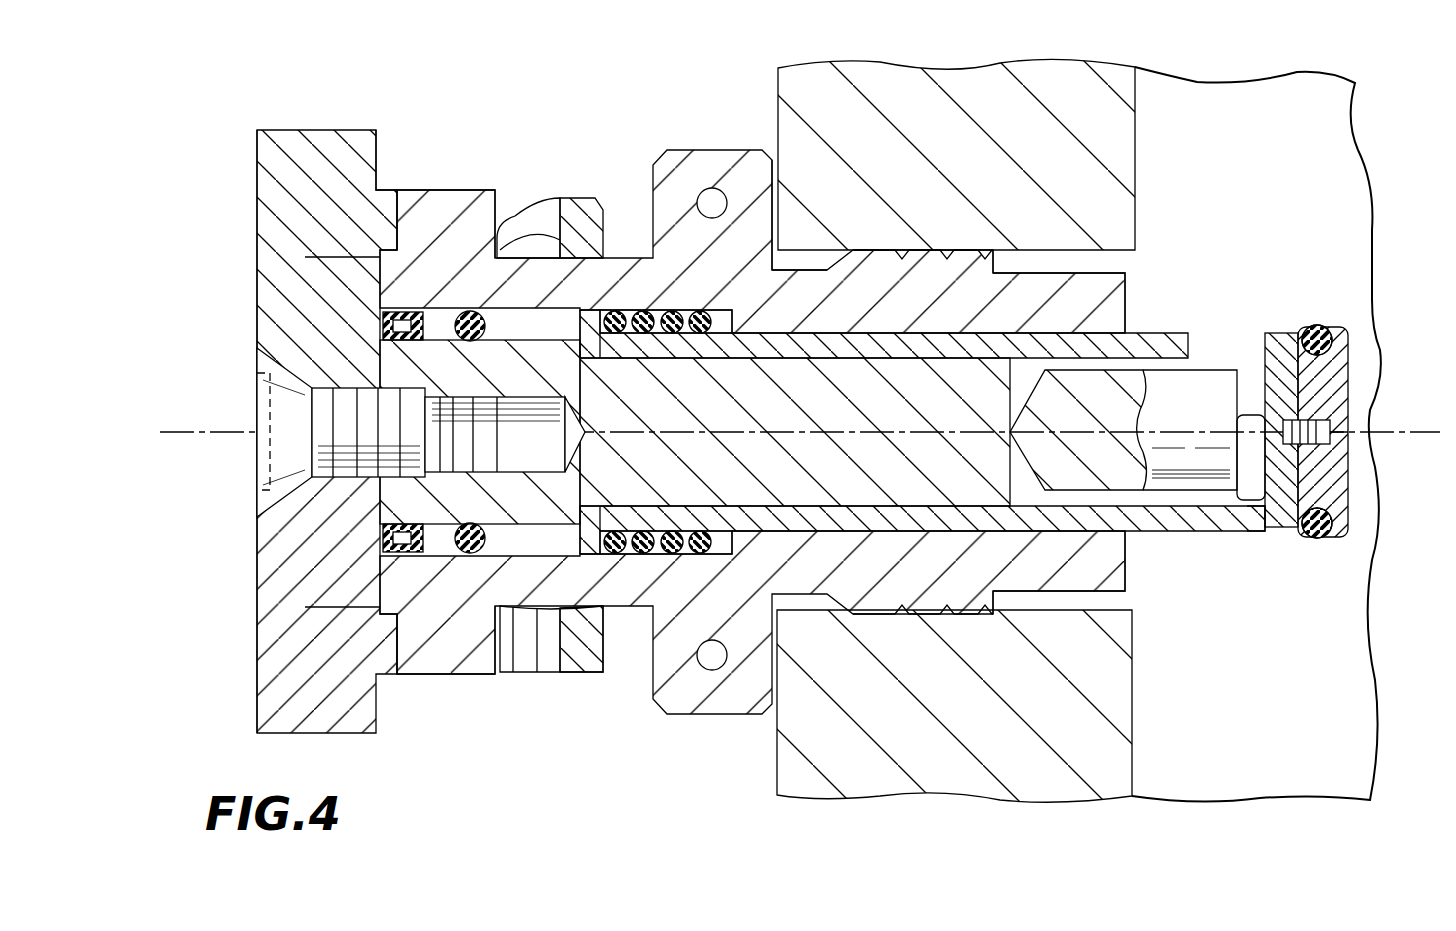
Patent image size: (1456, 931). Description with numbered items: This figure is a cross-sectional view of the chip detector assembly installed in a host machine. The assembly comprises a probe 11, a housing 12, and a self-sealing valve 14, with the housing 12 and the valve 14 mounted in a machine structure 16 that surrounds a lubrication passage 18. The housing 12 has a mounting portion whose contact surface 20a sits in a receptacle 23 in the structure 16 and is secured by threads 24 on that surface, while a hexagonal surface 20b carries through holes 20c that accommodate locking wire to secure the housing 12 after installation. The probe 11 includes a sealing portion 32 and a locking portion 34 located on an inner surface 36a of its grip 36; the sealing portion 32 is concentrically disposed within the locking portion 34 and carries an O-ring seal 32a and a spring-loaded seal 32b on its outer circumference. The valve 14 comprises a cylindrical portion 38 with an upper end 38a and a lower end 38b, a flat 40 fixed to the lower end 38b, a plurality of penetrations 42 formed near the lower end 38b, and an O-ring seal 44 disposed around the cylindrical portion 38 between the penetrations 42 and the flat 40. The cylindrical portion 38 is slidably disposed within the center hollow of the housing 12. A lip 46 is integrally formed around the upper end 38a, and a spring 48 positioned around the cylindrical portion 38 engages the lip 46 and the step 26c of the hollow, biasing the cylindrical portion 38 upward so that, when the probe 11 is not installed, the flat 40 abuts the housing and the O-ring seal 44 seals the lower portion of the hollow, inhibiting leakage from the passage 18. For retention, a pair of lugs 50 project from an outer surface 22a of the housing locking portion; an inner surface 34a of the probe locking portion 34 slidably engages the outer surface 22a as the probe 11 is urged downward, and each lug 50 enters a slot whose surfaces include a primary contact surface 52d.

The probe 11 is at (226, 186).
The housing 12 is at (612, 718).
The self-sealing valve 14 is at (1184, 317).
The machine structure 16 is at (783, 70).
The lubrication passage 18 is at (1256, 146).
The contact surface 20a is at (1005, 262).
The hexagonal surface 20b is at (690, 150).
The through holes 20c is at (773, 190).
The outer surface 22a is at (618, 612).
The receptacle 23 is at (1125, 263).
The threads 24 is at (870, 614).
The step 26c is at (722, 350).
The sealing portion 32 is at (490, 560).
The O-ring seal 32a is at (471, 322).
The spring-loaded seal 32b is at (401, 318).
The locking portion 34 is at (546, 682).
The inner surface 34a is at (598, 200).
The grip 36 is at (255, 656).
The inner surface 36a is at (380, 190).
The cylindrical portion 38 is at (1160, 539).
The upper end 38a is at (600, 362).
The lower end 38b is at (1295, 536).
The flat 40 is at (1348, 414).
The penetrations 42 is at (1218, 356).
The O-ring seal 44 is at (1313, 328).
The lip 46 is at (578, 350).
The spring 48 is at (621, 318).
The lugs 50 is at (440, 192).
The primary contact surface 52d is at (540, 215).